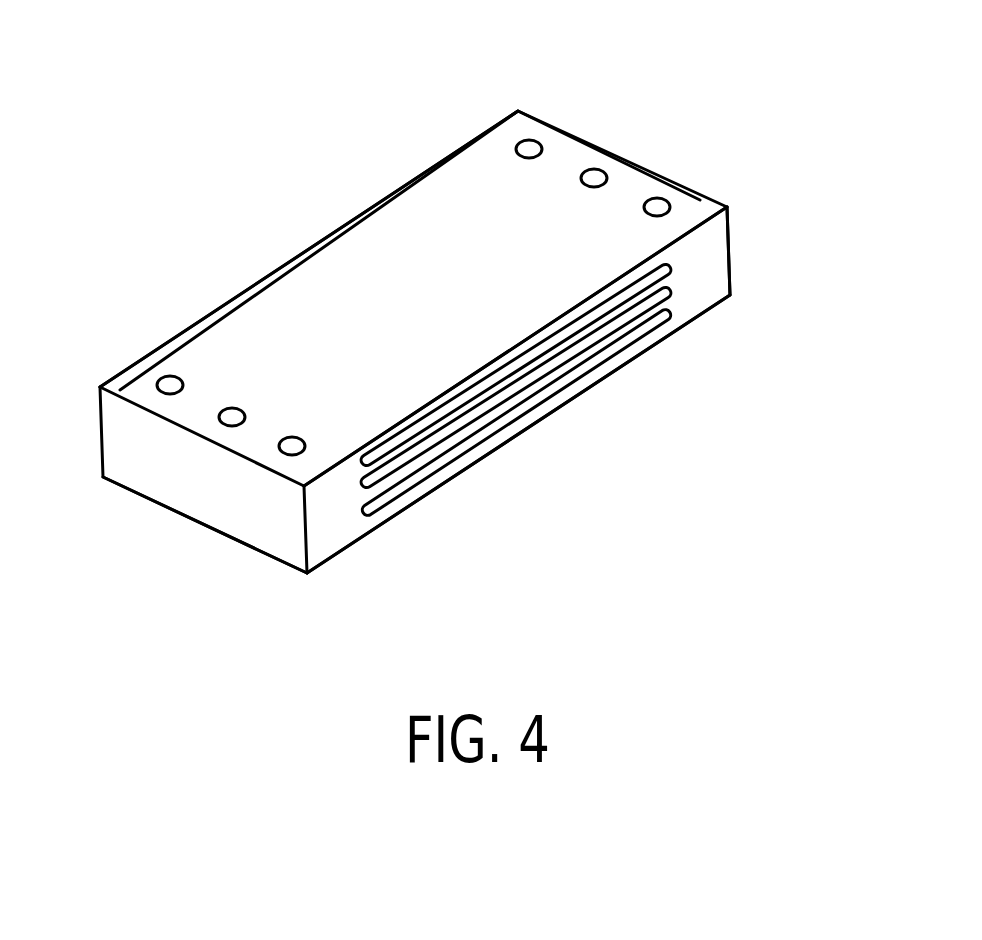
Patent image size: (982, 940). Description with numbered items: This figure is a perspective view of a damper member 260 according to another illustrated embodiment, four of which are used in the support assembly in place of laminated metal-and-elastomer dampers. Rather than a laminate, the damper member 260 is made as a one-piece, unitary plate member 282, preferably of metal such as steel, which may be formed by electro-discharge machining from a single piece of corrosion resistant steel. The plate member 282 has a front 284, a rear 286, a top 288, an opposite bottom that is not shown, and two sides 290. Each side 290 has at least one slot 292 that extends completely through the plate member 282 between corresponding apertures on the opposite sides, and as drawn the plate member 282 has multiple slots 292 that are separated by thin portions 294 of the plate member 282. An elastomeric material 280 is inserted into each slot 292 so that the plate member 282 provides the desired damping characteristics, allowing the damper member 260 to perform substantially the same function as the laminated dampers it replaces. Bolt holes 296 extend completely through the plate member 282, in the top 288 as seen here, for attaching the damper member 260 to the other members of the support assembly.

The damper member 260 is at (260, 228).
The elastomeric material 280 is at (668, 315).
The plate member 282 is at (463, 188).
The front 284 is at (213, 503).
The rear 286 is at (730, 245).
The top 288 is at (213, 340).
The side 290 is at (710, 283).
The slot 292 is at (420, 437).
The thin portion 294 is at (477, 430).
The bolt hole 296 is at (168, 383).